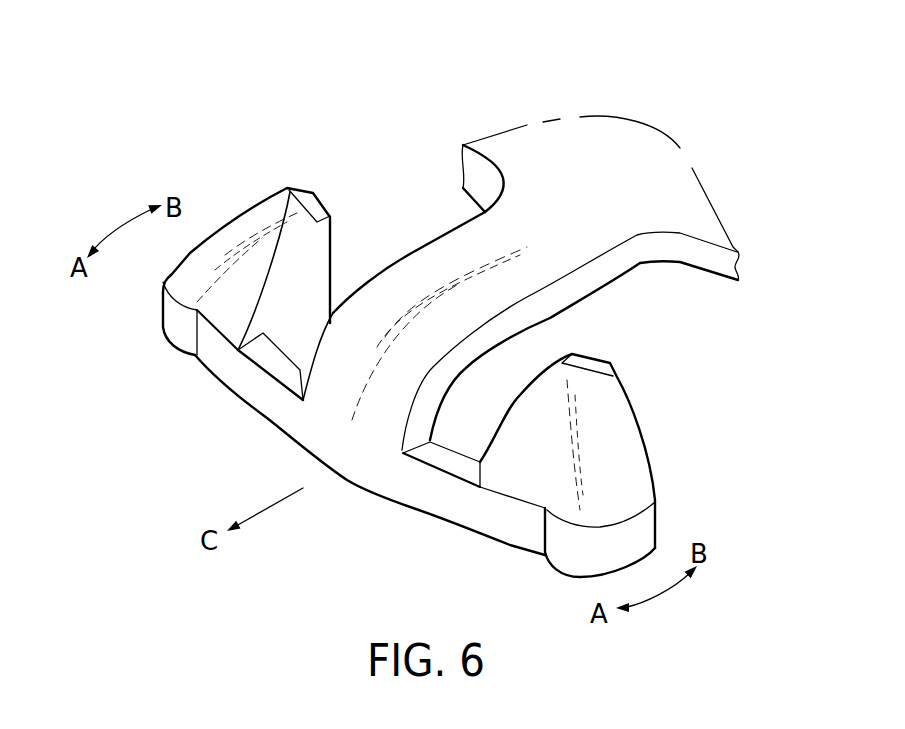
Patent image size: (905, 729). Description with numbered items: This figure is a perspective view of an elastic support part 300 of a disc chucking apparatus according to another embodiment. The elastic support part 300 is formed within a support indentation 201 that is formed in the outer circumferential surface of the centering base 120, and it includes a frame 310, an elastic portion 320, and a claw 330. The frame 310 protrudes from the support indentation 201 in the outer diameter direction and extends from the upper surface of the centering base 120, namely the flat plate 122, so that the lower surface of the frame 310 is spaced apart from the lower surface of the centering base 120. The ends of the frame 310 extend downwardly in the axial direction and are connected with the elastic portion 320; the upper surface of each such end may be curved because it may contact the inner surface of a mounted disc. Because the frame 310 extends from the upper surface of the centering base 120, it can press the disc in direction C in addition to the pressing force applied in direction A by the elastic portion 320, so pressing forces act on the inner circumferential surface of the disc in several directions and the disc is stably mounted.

The centering base 120 is at (645, 103).
The flat plate 122 is at (640, 203).
The support indentation 201 is at (638, 331).
The elastic support part 300 is at (309, 150).
The frame 310 is at (523, 263).
The elastic portion 320 is at (282, 413).
The claw 330 is at (315, 253).